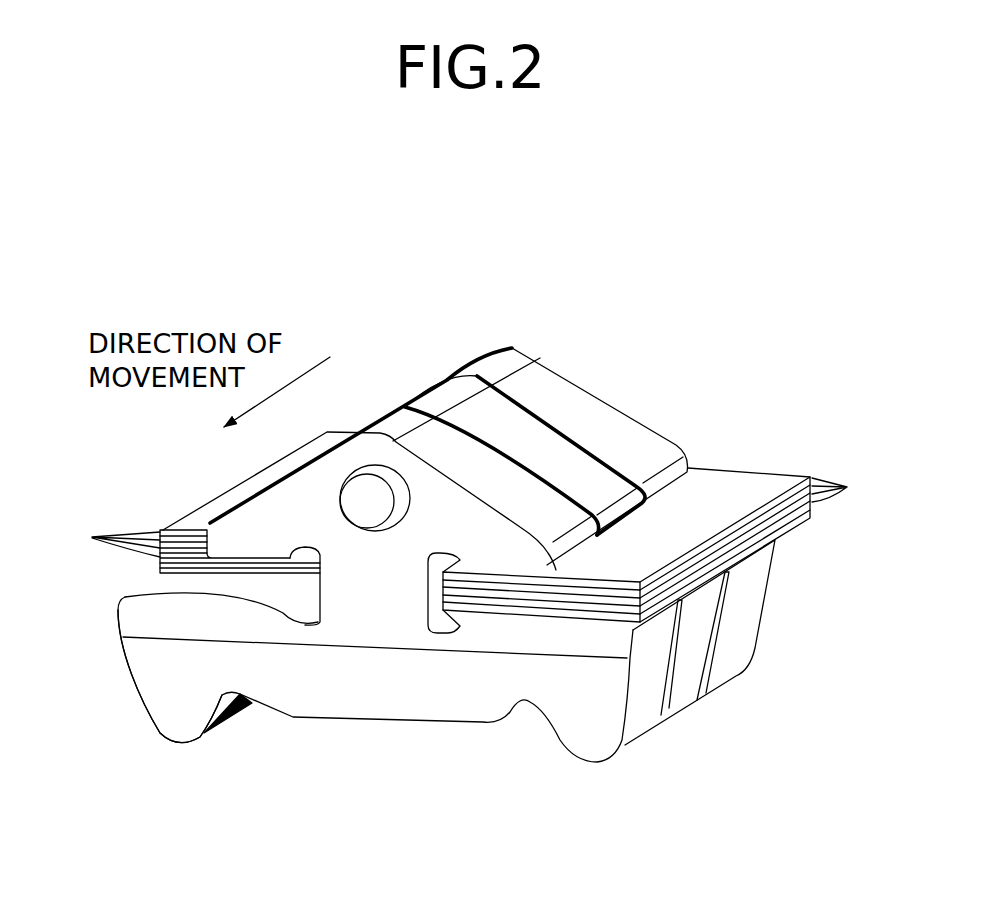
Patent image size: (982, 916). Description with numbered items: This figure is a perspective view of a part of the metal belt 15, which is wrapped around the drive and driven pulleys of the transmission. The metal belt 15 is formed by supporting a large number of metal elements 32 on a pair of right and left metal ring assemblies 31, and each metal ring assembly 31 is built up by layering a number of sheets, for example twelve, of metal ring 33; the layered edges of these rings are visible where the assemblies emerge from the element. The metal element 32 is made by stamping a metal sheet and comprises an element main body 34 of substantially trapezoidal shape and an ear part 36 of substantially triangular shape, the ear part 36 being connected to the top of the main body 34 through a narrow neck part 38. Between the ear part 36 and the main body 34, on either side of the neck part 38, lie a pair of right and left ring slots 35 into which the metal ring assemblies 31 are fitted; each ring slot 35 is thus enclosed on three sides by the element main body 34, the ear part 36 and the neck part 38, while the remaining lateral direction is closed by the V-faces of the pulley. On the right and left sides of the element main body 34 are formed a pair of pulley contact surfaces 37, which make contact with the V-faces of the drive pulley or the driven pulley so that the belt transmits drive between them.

The metal belt 15 is at (435, 328).
The metal ring assembly 31 is at (179, 513).
The metal element 32 is at (490, 750).
The metal ring 33 is at (471, 515).
The element main body 34 is at (168, 705).
The ring slot 35 is at (217, 582).
The ear part 36 is at (382, 406).
The pulley contact surface 37 is at (637, 700).
The neck part 38 is at (373, 617).